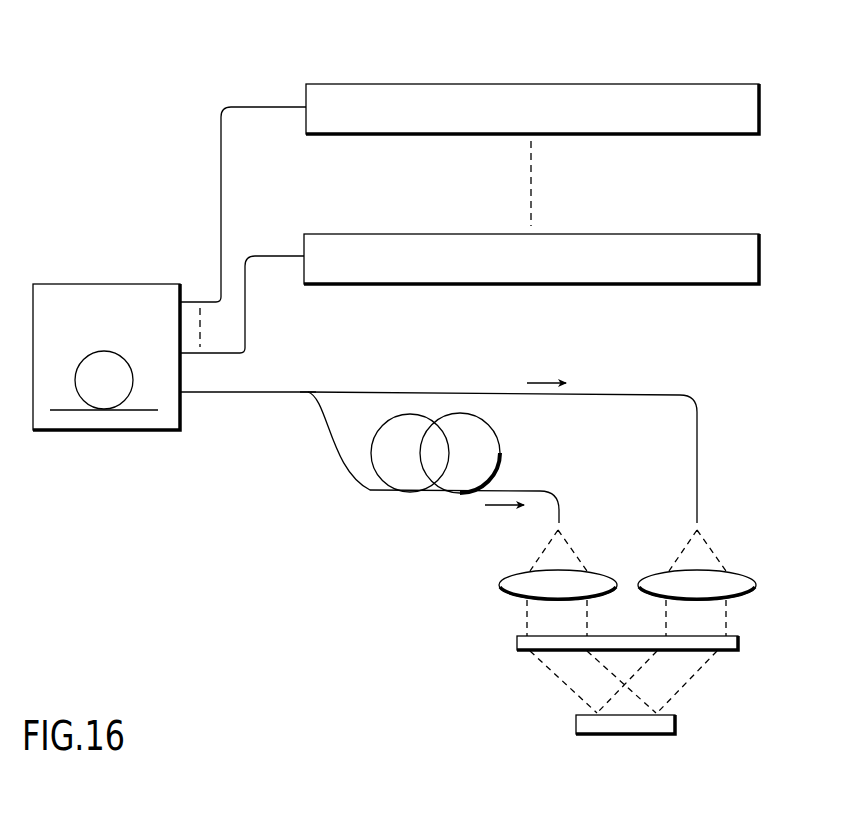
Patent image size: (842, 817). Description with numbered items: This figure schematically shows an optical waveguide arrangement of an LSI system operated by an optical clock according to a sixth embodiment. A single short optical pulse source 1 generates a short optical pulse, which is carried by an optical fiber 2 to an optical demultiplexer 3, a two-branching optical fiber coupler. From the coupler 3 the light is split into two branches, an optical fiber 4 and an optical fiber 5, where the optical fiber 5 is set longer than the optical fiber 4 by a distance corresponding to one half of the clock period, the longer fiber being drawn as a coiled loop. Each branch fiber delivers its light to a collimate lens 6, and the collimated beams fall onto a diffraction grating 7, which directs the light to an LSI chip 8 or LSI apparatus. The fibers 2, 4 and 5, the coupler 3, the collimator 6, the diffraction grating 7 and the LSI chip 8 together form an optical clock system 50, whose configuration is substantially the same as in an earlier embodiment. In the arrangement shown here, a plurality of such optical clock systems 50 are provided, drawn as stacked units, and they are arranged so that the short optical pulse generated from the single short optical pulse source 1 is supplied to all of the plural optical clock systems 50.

The short optical pulse source 1 is at (110, 284).
The optical fiber 2 is at (236, 394).
The optical demultiplexer 3 is at (294, 402).
The optical fiber 4 is at (393, 393).
The optical fiber 5 is at (370, 492).
The collimate lens 6 is at (516, 574).
The diffraction grating 7 is at (517, 640).
The LSI chip 8 is at (576, 722).
The optical clock system 50 is at (638, 71).